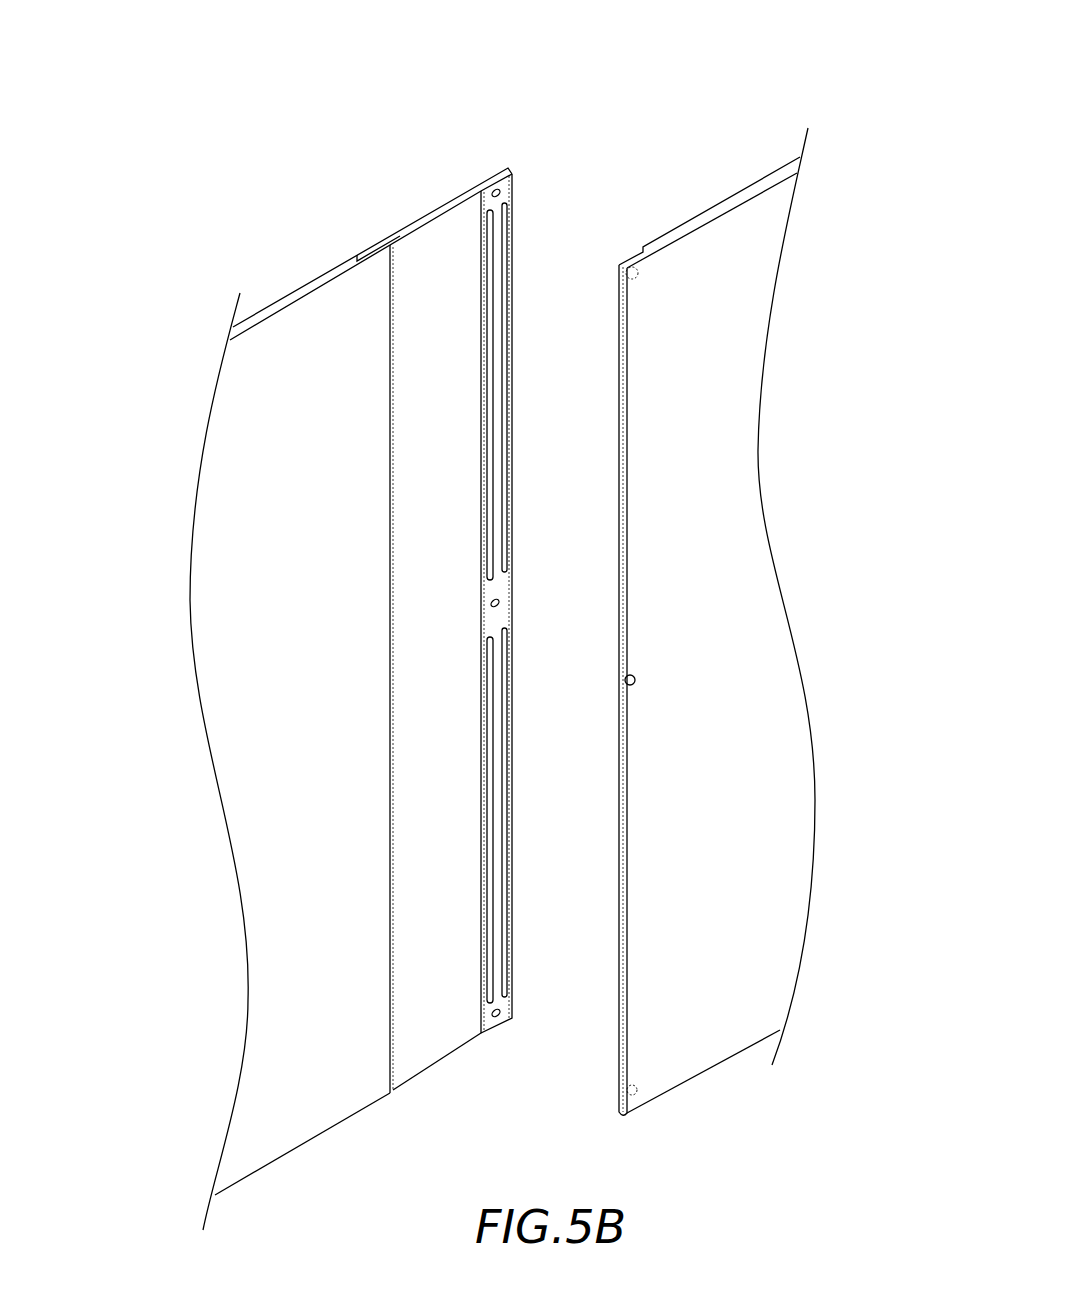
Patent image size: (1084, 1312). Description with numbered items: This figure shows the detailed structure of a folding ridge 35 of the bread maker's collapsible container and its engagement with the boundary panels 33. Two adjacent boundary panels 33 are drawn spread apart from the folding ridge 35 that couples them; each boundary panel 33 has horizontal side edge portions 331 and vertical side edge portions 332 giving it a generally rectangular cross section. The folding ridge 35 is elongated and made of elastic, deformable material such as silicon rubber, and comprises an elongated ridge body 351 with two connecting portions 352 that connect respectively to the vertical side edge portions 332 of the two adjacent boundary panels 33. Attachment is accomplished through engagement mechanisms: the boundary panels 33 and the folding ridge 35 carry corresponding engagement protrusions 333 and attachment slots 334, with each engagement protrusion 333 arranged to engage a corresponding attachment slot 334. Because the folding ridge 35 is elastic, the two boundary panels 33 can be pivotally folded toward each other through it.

The boundary panel 33 is at (290, 770).
The horizontal side edge portion 331 is at (263, 302).
The vertical side edge portion 332 is at (395, 262).
The engagement protrusion 333 is at (486, 233).
The attachment slot 334 is at (503, 192).
The folding ridge 35 is at (500, 158).
The elongated ridge body 351 is at (445, 488).
The connecting portion 352 is at (362, 250).